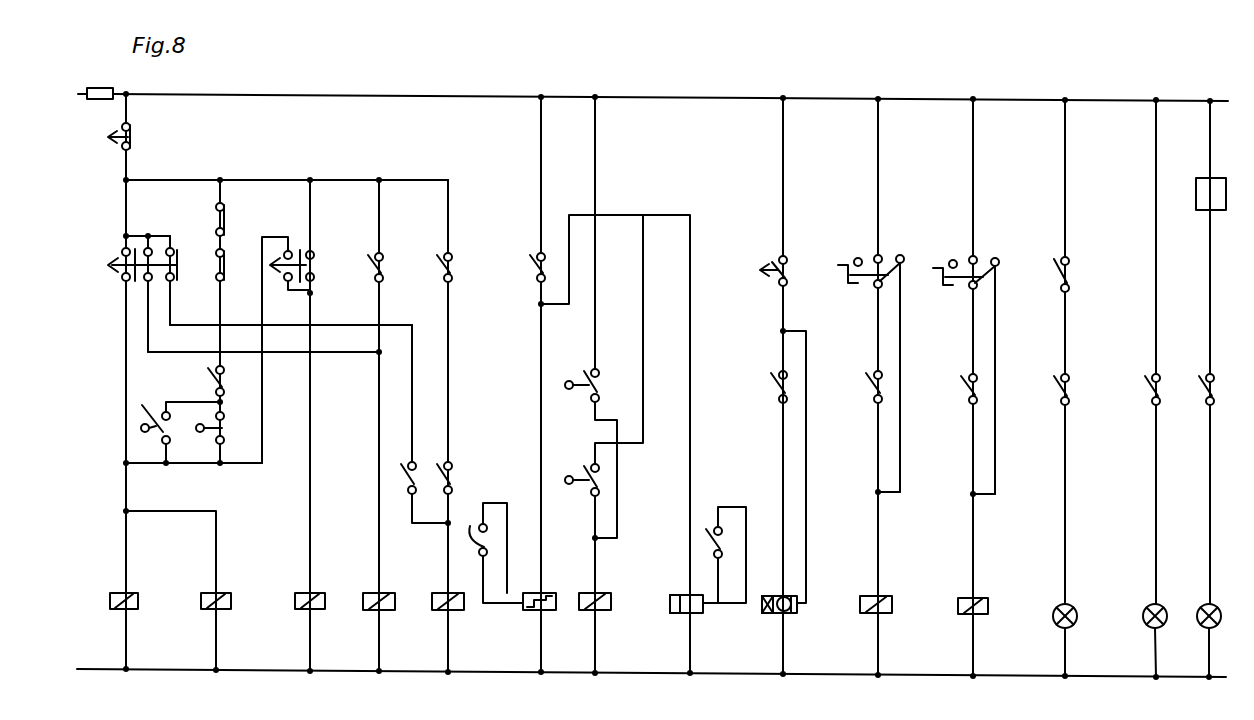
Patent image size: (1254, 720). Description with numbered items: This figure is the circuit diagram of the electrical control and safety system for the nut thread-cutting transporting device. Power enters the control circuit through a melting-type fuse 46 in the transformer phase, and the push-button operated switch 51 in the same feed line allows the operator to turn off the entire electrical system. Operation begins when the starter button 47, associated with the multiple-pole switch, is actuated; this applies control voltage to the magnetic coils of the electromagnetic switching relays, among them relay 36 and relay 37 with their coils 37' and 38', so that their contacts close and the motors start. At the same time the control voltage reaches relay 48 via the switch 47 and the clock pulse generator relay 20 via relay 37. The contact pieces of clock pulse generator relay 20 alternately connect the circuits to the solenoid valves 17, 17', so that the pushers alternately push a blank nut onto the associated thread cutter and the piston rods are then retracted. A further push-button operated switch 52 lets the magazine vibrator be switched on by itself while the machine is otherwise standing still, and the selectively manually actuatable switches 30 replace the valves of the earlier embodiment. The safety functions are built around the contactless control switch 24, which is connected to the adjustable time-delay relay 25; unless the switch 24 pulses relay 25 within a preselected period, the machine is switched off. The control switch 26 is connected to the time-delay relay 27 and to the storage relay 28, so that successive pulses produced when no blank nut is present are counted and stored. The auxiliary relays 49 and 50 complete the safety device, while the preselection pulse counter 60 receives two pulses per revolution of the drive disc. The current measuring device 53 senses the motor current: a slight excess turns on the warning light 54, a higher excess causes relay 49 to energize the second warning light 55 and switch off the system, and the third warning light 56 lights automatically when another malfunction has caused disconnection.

The melting-type fuse 46 is at (94, 102).
The push-button operated switch 51 is at (108, 142).
The starter button 47 is at (118, 276).
The electrical storage relay 28 is at (216, 224).
The push-button operated switch 52 is at (290, 250).
The relay 48 is at (216, 281).
The electromagnetic switching relay 36 is at (218, 382).
The control switch 26 is at (325, 491).
The adjustable electrical time-delay relay 25 is at (200, 433).
The magnetic coil 37' is at (236, 604).
The magnetic coil 38' is at (296, 625).
The auxiliary relay 49 is at (1148, 398).
The current measuring device 53 is at (450, 478).
The electromagnetic switching relay 37 is at (522, 384).
The electrical contactless control switch 24 is at (580, 384).
The preselection pulse counter 60 is at (530, 612).
The auxiliary relay 50 is at (594, 612).
The electrically adjustable time-delay relay 27 is at (772, 262).
The electrical selectively manually actuatable switch 30 is at (856, 260).
The clock pulse generator relay 20 is at (868, 392).
The solenoid valve 17 is at (865, 626).
The solenoid valve 17' is at (960, 629).
The third warning light 56 is at (1054, 622).
The second warning light 55 is at (1144, 622).
The warning light 54 is at (1219, 622).